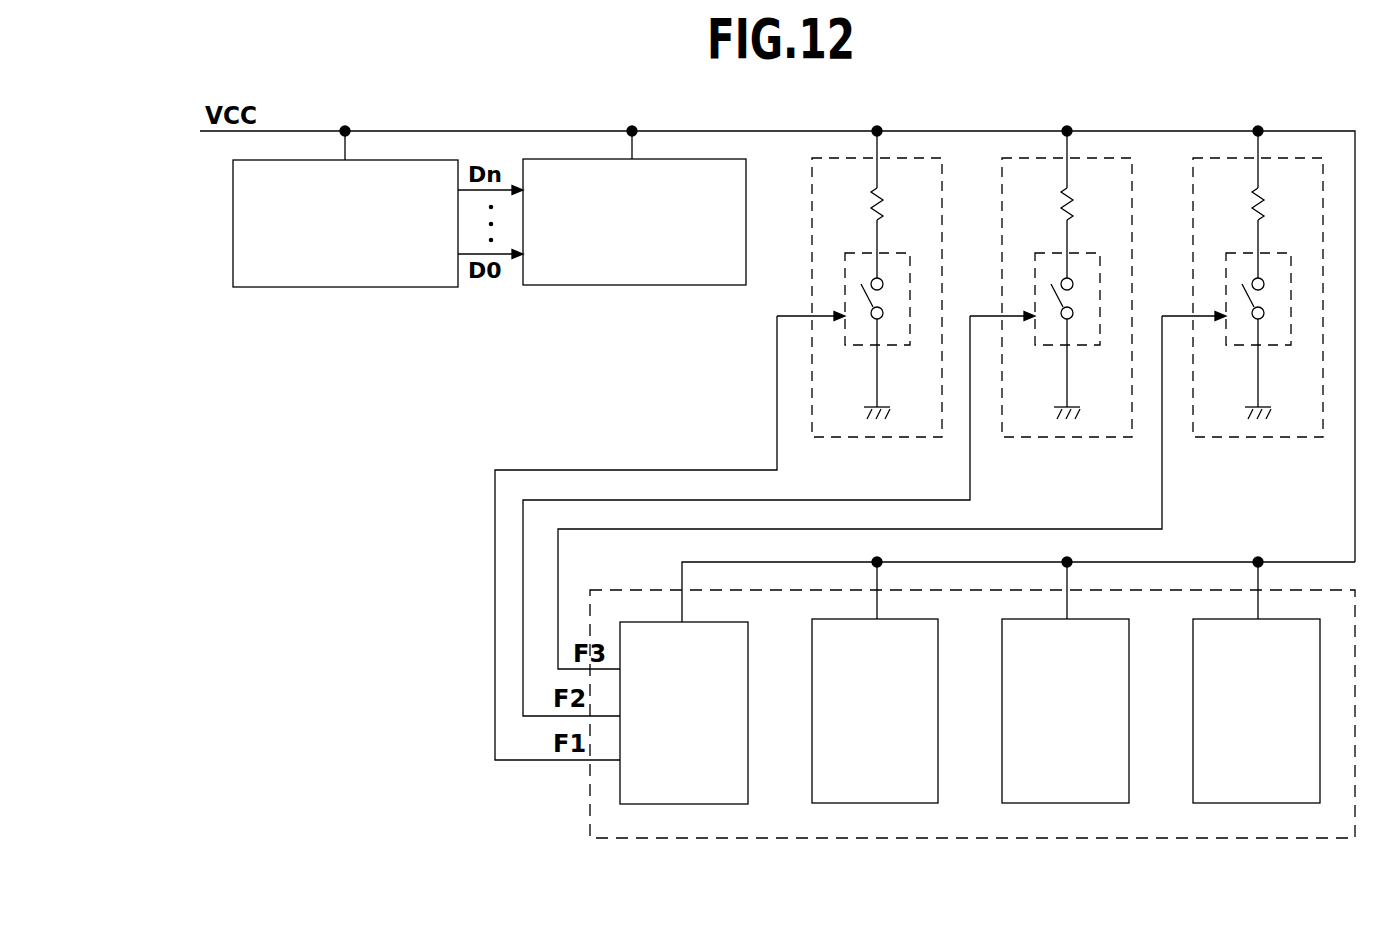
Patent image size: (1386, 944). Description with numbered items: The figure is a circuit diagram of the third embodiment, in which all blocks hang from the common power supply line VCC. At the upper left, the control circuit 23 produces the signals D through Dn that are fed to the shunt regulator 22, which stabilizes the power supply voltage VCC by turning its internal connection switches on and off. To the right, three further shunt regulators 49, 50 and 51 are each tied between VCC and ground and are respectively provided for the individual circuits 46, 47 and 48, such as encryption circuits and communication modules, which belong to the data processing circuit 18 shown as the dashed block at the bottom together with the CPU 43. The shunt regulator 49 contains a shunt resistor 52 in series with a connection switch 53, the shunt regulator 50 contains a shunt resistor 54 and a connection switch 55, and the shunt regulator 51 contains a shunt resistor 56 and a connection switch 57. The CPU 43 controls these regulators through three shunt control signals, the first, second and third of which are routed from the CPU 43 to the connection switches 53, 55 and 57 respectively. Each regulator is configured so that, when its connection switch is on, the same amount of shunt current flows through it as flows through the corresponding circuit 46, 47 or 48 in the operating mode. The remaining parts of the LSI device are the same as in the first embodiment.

The data processing circuit 18 is at (682, 840).
The shunt regulator 22 is at (649, 287).
The control circuit 23 is at (323, 288).
The CPU 43 is at (717, 622).
The circuit 46 is at (912, 619).
The circuit 47 is at (1092, 619).
The circuit 48 is at (1273, 619).
The shunt regulator 49 is at (877, 313).
The shunt regulator 50 is at (1067, 313).
The shunt regulator 51 is at (1258, 313).
The shunt resistor 52 is at (883, 208).
The connection switch 53 is at (858, 252).
The shunt resistor 54 is at (1073, 208).
The connection switch 55 is at (1048, 252).
The shunt resistor 56 is at (1264, 208).
The connection switch 57 is at (1239, 252).